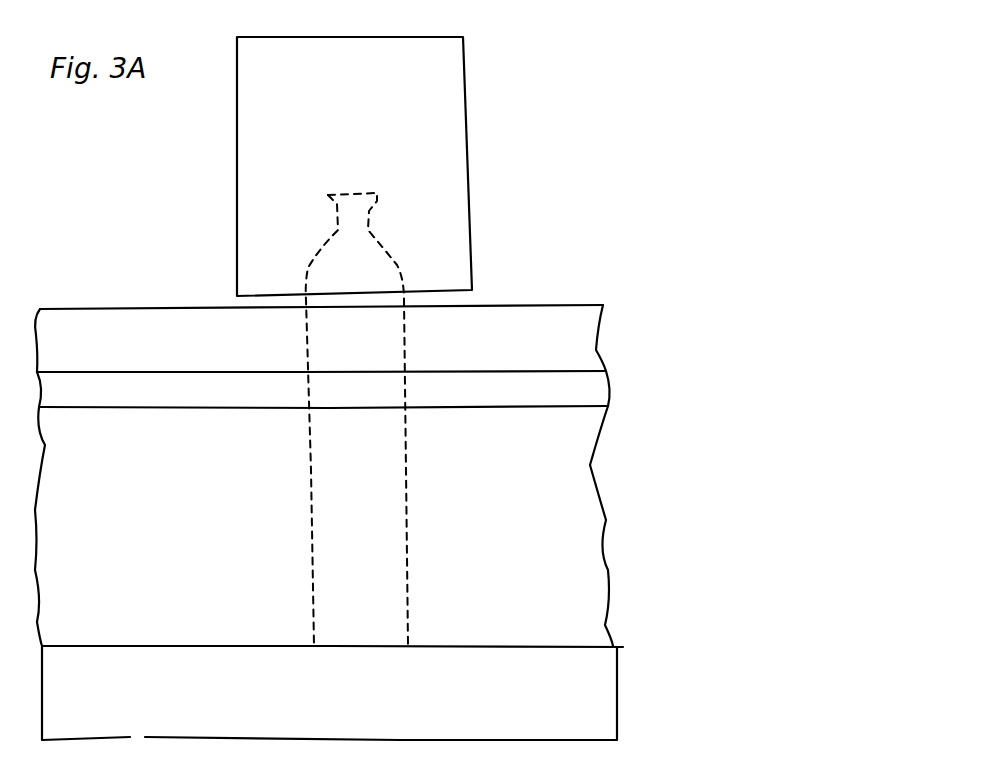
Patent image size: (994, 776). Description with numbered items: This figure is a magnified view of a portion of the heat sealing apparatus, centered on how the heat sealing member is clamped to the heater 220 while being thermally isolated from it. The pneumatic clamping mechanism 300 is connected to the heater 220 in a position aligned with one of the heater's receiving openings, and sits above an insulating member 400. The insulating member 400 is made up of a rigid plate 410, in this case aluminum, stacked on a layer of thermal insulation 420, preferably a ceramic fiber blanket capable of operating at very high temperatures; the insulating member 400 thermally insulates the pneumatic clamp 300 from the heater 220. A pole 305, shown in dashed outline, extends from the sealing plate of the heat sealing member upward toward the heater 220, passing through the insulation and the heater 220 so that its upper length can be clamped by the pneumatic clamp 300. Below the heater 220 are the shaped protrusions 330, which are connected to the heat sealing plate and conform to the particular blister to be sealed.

The pneumatic clamping mechanism 300 is at (378, 101).
The pole 305 is at (312, 440).
The rigid plate 410 is at (138, 349).
The layer of thermal insulation 420 is at (142, 394).
The insulating member 400 is at (620, 305).
The heater 220 is at (158, 516).
The shaped protrusion 330 is at (513, 687).